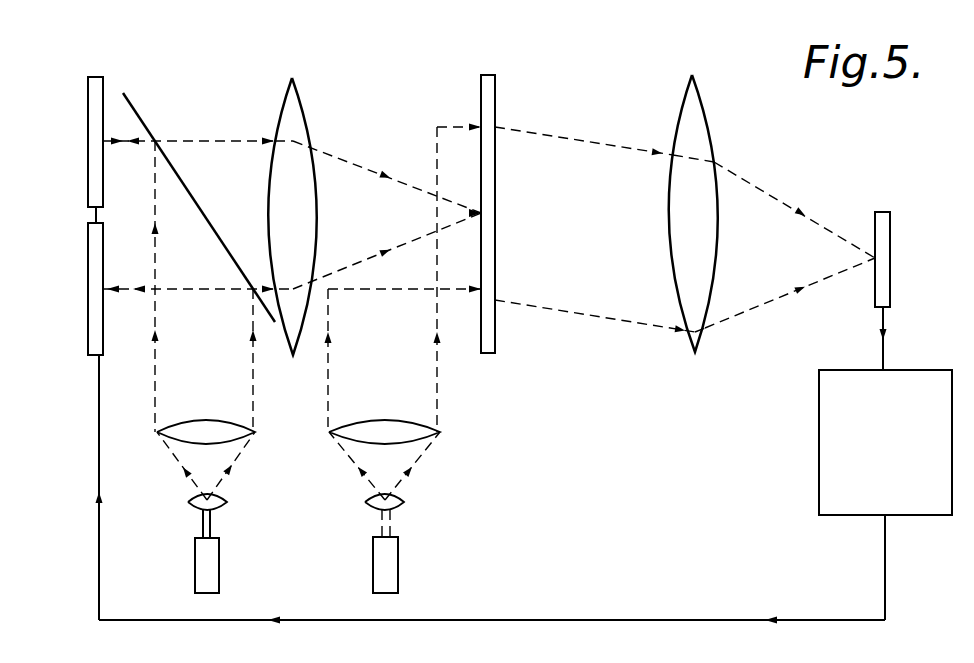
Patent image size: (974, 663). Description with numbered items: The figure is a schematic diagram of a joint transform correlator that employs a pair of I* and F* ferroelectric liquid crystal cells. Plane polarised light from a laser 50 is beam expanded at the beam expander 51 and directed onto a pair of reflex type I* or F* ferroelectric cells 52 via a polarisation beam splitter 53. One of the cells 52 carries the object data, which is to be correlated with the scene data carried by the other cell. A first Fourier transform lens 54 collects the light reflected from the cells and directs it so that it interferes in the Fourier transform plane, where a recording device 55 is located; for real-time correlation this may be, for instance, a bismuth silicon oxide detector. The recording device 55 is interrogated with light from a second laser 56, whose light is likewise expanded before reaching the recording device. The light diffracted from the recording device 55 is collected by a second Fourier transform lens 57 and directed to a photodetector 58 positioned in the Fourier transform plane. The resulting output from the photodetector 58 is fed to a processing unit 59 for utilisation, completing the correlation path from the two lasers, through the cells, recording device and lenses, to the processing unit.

The laser 50 is at (195, 566).
The beam expander 51 is at (192, 500).
The ferroelectric cells 52 is at (88, 95).
The polarisation beam splitter 53 is at (140, 119).
The first Fourier transform lens 54 is at (289, 92).
The recording device 55 is at (496, 112).
The second laser 56 is at (398, 568).
The second Fourier transform lens 57 is at (686, 94).
The photodetector 58 is at (891, 248).
The processing unit 59 is at (819, 404).